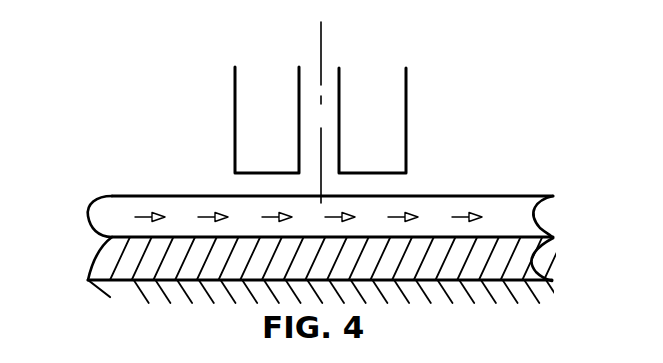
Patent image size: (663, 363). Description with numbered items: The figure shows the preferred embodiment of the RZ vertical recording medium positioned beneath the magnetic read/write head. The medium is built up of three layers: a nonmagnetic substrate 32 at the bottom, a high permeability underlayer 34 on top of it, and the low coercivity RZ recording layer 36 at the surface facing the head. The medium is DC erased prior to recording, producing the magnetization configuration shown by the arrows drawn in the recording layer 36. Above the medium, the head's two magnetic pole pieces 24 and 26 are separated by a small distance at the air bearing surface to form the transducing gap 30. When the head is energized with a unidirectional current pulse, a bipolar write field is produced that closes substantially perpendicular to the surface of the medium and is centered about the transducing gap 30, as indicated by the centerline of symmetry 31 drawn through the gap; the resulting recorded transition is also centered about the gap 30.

The magnetic pole piece 24 is at (397, 113).
The magnetic pole piece 26 is at (266, 109).
The transducing gap 30 is at (325, 178).
The centerline of symmetry 31 is at (321, 65).
The nonmagnetic substrate 32 is at (110, 297).
The high permeability underlayer 34 is at (112, 262).
The RZ recording layer 36 is at (110, 212).